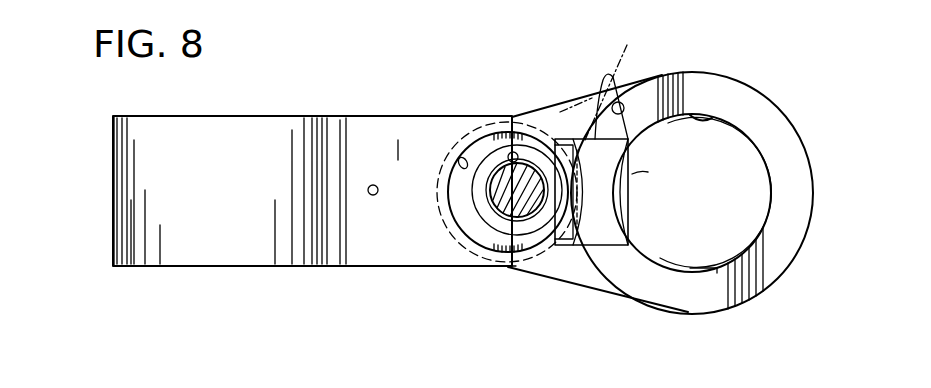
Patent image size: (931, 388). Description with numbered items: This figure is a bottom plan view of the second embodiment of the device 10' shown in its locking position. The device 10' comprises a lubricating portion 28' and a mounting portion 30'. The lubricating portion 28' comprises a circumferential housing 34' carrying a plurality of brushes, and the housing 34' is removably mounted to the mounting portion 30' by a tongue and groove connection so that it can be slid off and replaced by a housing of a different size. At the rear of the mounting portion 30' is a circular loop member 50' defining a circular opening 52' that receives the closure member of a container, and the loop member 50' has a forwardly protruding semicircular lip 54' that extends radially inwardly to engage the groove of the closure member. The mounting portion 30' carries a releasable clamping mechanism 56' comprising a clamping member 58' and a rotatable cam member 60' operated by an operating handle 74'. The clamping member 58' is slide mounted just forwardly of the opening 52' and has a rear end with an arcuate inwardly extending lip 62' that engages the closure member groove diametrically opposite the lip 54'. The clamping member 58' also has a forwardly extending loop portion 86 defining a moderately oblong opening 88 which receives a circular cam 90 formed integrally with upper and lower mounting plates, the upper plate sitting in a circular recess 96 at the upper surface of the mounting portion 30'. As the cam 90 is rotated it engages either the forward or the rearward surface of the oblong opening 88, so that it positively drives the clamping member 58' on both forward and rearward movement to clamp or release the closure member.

The device 10' is at (663, 62).
The lubricating portion 28' is at (312, 159).
The circumferential housing 34' is at (145, 176).
The mounting portion 30' is at (598, 321).
The releasable clamping mechanism 56' is at (499, 310).
The circular loop member 50' is at (710, 193).
The circular opening 52' is at (734, 86).
The semicircular lip 54' is at (715, 195).
The arcuate lip 62' is at (669, 164).
The clamping member 58' is at (617, 146).
The operating handle 74' is at (618, 80).
The cam member 60' is at (507, 159).
The oblong opening 88 is at (510, 152).
The circular recess 96 is at (466, 156).
The loop portion 86 is at (488, 214).
The circular cam 90 is at (505, 212).